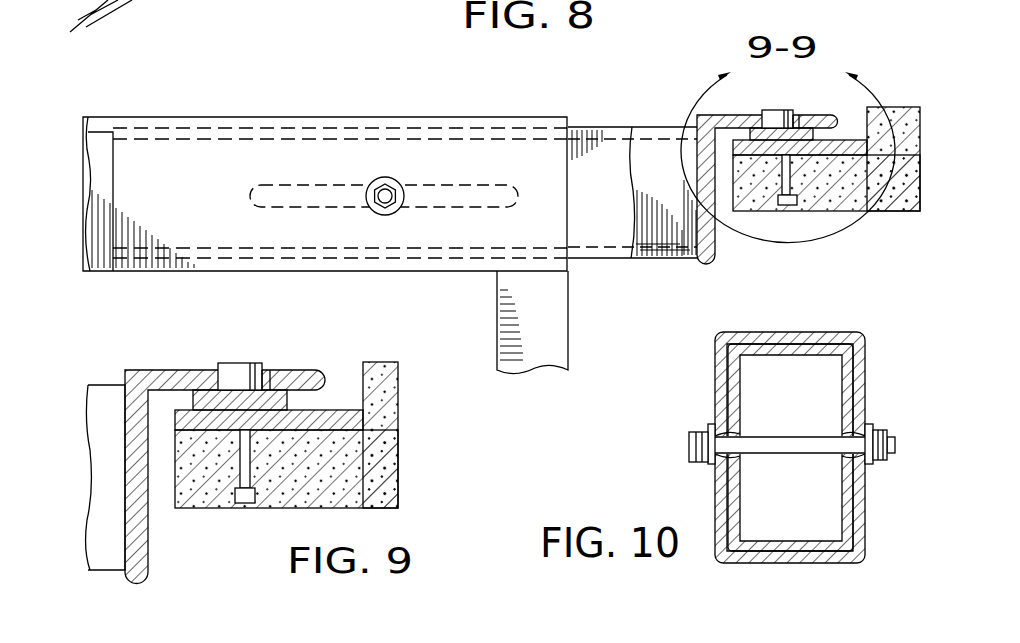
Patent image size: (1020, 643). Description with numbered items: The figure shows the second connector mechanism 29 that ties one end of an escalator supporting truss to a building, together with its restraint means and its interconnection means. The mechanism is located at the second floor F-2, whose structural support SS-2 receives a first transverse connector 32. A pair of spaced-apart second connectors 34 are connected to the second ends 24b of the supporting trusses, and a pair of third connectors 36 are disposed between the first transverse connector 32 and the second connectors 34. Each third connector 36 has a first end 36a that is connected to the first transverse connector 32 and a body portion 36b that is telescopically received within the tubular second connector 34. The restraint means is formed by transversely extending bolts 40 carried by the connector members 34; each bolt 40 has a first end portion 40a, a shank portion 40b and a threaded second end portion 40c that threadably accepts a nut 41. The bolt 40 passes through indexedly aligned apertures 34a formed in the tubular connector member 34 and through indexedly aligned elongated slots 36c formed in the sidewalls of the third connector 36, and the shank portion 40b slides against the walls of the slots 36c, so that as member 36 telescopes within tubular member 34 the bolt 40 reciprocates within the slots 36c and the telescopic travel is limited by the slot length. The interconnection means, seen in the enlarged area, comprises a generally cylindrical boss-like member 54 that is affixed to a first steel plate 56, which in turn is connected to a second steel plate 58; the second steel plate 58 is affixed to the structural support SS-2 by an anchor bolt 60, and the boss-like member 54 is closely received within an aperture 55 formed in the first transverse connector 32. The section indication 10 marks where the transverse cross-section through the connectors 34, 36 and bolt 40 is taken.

In FIG. 8, the section line 10- 10 is at (318, 62).
In FIG. 8, the second end of supporting truss 24b is at (96, 140).
In FIG. 8, the second connector mechanism 29 is at (587, 112).
In FIG. 8, the first transverse connector 32 is at (703, 112).
In FIG. 9, the first transverse connector 32 is at (146, 371).
In FIG. 8, the second connector 34 is at (368, 116).
In FIG. 10, the second connector 34 is at (706, 378).
In FIG. 10, the aperture 34a is at (840, 480).
In FIG. 8, the third connector 36 is at (658, 162).
In FIG. 9, the third connector 36 is at (100, 382).
In FIG. 10, the third connector 36 is at (853, 346).
In FIG. 8, the first end of third connector 36a is at (658, 230).
In FIG. 8, the body portion of third connector 36b is at (285, 134).
In FIG. 10, the body portion of third connector 36b is at (790, 547).
In FIG. 8, the elongated slot 36c is at (496, 198).
In FIG. 10, the elongated slot 36c is at (847, 424).
In FIG. 8, the bolt 40 is at (374, 183).
In FIG. 10, the bolt 40 is at (700, 444).
In FIG. 10, the first end portion of bolt 40a is at (690, 458).
In FIG. 10, the shank portion of bolt 40b is at (768, 445).
In FIG. 10, the threaded second end portion of bolt 40c is at (837, 450).
In FIG. 8, the nut 41 is at (383, 201).
In FIG. 10, the nut 41 is at (881, 463).
In FIG. 8, the boss-like member 54 is at (778, 111).
In FIG. 9, the boss-like member 54 is at (237, 366).
In FIG. 8, the aperture 55 is at (798, 118).
In FIG. 9, the aperture 55 is at (267, 380).
In FIG. 8, the first steel plate 56 is at (768, 142).
In FIG. 9, the first steel plate 56 is at (223, 398).
In FIG. 8, the second steel plate 58 is at (821, 148).
In FIG. 9, the second steel plate 58 is at (306, 418).
In FIG. 8, the anchor bolt 60 is at (786, 206).
In FIG. 9, the anchor bolt 60 is at (248, 504).
In FIG. 8, the second floor F-2 is at (888, 140).
In FIG. 9, the second floor F-2 is at (387, 360).
In FIG. 8, the structural support SS-2 is at (899, 210).
In FIG. 9, the structural support SS-2 is at (368, 449).